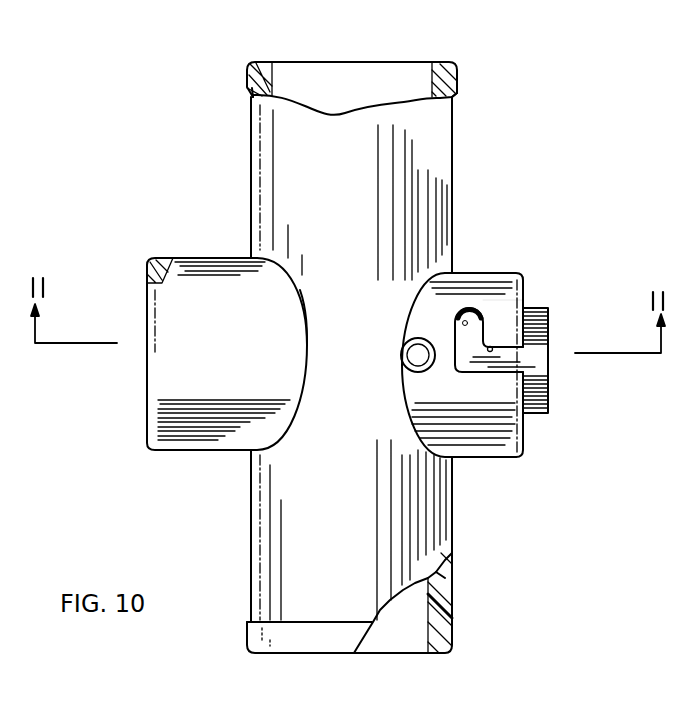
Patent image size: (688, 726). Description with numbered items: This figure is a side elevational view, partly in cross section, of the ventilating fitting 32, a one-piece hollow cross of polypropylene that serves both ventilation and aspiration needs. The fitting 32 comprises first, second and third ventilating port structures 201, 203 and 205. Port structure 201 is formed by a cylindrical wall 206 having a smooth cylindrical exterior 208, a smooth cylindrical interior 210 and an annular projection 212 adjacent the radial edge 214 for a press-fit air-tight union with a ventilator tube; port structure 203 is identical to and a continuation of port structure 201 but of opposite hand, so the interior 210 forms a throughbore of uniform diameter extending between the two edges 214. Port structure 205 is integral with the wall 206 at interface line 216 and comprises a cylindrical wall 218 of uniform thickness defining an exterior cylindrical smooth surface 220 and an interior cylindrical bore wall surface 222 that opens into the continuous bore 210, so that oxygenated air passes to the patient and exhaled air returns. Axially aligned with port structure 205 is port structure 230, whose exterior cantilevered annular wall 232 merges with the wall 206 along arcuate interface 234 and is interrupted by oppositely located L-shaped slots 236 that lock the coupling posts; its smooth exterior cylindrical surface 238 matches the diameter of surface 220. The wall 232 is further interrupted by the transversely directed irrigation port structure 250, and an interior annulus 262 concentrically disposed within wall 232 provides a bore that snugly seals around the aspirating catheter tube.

The ventilating fitting 32 is at (259, 55).
The first ventilating port structure 201 is at (318, 164).
The second ventilating port structure 203 is at (314, 527).
The third ventilating port structure 205 is at (218, 337).
The cylindrical wall 206 is at (255, 90).
The smooth cylindrical exterior 208 is at (251, 157).
The smooth cylindrical interior 210 is at (275, 83).
The annular projection 212 is at (457, 98).
The radial edge 214 is at (425, 62).
The interface line 216 is at (305, 318).
The cylindrical wall 218 is at (147, 264).
The exterior cylindrical smooth surface 220 is at (233, 258).
The interior cylindrical bore wall surface 222 is at (148, 287).
The port structure 230 is at (428, 397).
The exterior cantilevered annular wall 232 is at (519, 428).
The arcuate interface 234 is at (431, 272).
The L-shaped slot 236 is at (490, 347).
The exterior cylindrical surface 238 is at (488, 272).
The irrigation port structure 250 is at (413, 351).
The interior annulus 262 is at (545, 366).